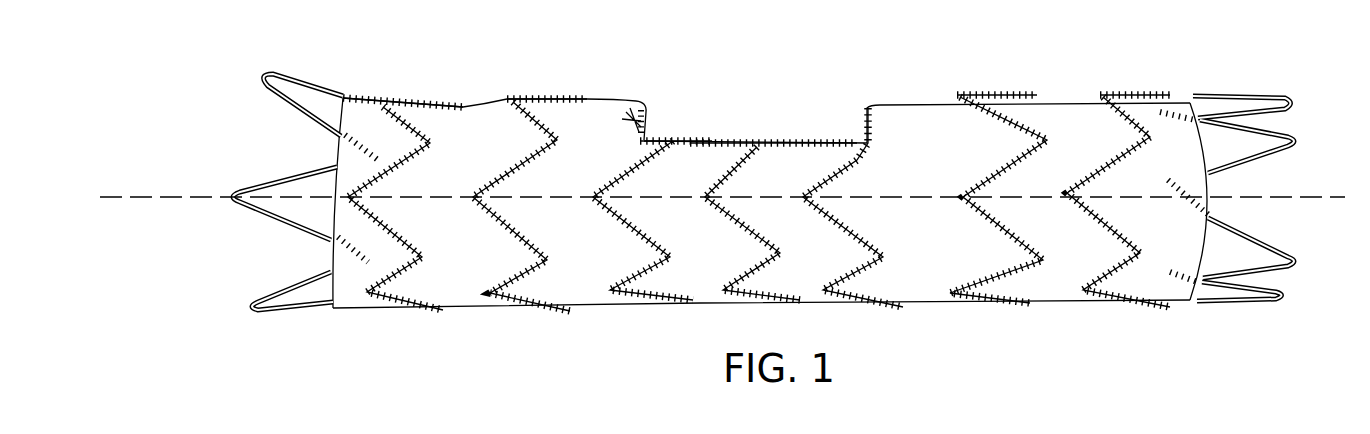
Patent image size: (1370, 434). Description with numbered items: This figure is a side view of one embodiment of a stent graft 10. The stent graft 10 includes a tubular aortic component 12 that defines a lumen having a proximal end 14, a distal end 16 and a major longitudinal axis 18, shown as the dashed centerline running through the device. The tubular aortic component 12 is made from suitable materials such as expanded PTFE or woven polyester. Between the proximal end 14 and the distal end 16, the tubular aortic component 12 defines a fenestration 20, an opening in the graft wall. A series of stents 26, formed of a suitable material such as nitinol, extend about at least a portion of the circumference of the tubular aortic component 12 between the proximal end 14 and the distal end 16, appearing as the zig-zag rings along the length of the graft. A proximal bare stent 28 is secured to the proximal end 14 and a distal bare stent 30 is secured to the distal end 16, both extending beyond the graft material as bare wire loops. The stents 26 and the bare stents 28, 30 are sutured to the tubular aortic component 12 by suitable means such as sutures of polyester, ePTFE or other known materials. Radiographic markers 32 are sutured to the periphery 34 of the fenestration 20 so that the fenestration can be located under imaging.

The stent graft 10 is at (536, 42).
The tubular aortic component 12 is at (917, 121).
The proximal end 14 is at (337, 155).
The distal end 16 is at (1212, 181).
The major longitudinal axis 18 is at (138, 195).
The fenestration 20 is at (690, 135).
The stents 26 is at (444, 106).
The proximal bare stent 28 is at (258, 180).
The distal bare stent 30 is at (1273, 126).
The radiographic markers 32 is at (663, 140).
The periphery 34 is at (740, 141).